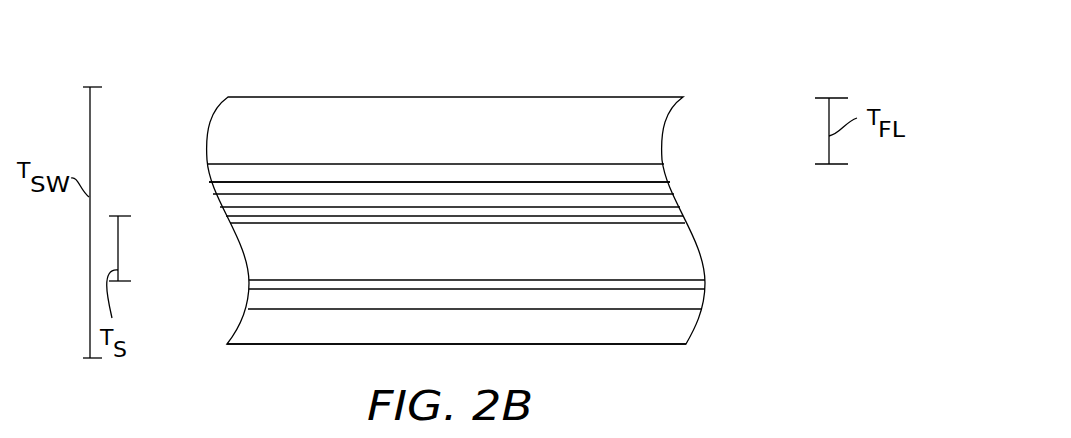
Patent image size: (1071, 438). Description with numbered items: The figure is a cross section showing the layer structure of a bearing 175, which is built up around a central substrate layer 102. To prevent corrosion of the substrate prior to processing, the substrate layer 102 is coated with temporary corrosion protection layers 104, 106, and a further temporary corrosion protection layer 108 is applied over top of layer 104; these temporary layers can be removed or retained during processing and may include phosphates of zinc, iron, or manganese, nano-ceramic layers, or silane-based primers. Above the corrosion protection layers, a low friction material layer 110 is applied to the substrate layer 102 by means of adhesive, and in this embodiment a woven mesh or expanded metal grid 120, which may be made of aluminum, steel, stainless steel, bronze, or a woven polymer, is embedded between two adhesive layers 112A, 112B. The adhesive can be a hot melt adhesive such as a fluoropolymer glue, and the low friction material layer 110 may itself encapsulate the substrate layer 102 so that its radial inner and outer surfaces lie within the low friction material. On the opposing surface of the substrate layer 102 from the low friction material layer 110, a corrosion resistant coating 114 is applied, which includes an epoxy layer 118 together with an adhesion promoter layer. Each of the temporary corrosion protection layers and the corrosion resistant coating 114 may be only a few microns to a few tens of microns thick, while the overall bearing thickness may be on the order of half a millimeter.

The bearing 175 is at (787, 57).
The low friction material layer 110 is at (208, 131).
The adhesive layer 112B is at (208, 173).
The adhesive layer 112A is at (218, 202).
The woven mesh or expanded metal grid 120 is at (672, 185).
The temporary corrosion protection layer 108 is at (679, 209).
The substrate layer 102 is at (232, 227).
The temporary corrosion protection layer 104 is at (686, 220).
The temporary corrosion protection layer 106 is at (706, 283).
The corrosion resistant coating 114 is at (713, 290).
The epoxy layer 118 is at (232, 333).